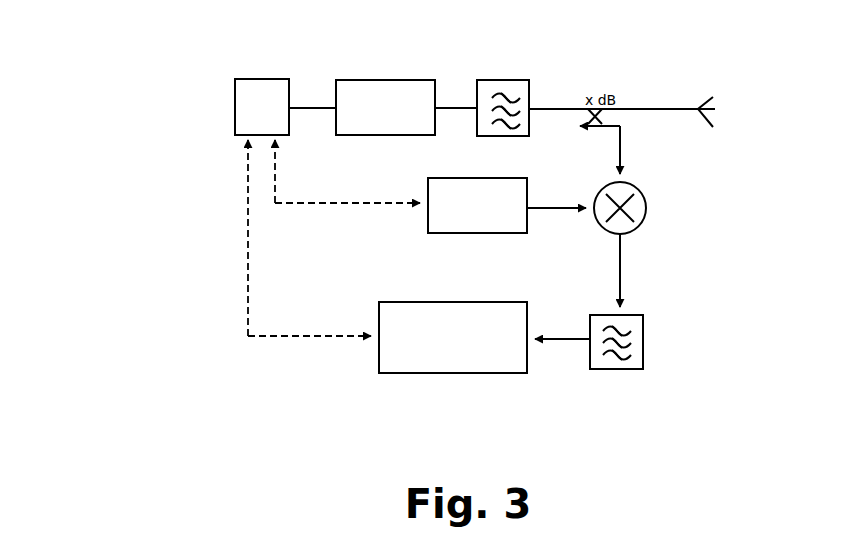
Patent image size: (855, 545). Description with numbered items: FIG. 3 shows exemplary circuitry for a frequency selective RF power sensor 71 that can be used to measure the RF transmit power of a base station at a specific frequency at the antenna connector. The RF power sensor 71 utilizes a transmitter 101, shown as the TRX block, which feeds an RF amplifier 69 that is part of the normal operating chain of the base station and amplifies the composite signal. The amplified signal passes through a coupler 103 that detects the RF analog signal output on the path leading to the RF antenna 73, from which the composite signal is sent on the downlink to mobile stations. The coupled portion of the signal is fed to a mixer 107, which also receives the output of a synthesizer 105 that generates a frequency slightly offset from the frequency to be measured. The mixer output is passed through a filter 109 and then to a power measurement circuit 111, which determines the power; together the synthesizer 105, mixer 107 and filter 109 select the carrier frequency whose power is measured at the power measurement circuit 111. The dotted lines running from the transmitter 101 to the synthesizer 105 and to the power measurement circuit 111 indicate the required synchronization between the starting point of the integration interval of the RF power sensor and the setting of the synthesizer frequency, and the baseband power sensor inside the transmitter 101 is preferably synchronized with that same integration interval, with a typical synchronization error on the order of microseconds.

The RF power sensor 71 is at (156, 178).
The transmitter 101 is at (257, 79).
The RF amplifier 69 is at (378, 80).
The coupler 103 is at (510, 81).
The RF antenna 73 is at (665, 108).
The synthesizer 105 is at (429, 192).
The mixer 107 is at (647, 203).
The filter 109 is at (631, 370).
The power measurement circuit 111 is at (378, 360).